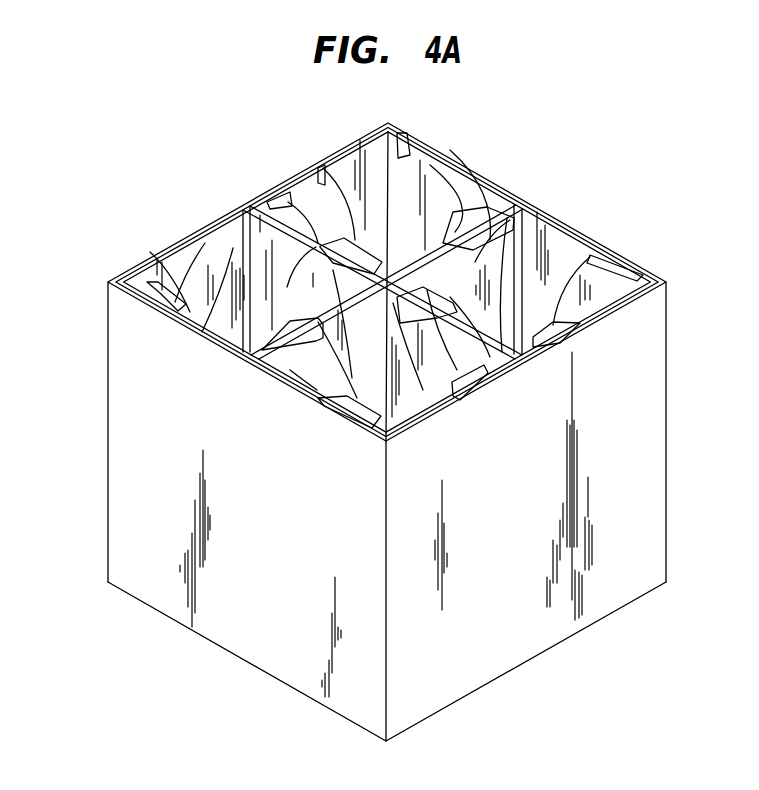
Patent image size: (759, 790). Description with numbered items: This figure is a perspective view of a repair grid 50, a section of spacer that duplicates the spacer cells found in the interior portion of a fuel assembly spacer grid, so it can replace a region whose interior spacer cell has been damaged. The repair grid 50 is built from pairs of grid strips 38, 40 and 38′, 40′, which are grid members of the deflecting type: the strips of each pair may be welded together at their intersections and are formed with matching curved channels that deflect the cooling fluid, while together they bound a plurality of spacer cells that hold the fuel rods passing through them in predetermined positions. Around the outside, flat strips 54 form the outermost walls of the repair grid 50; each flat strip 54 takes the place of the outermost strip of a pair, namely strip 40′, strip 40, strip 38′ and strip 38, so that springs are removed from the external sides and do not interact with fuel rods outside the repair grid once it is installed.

The grid strip 38 is at (475, 192).
The grid strip 38′ is at (413, 400).
The grid strip 40 is at (207, 330).
The grid strip 40′ is at (242, 265).
The repair grid 50 is at (634, 202).
The flat strip 54 is at (257, 197).